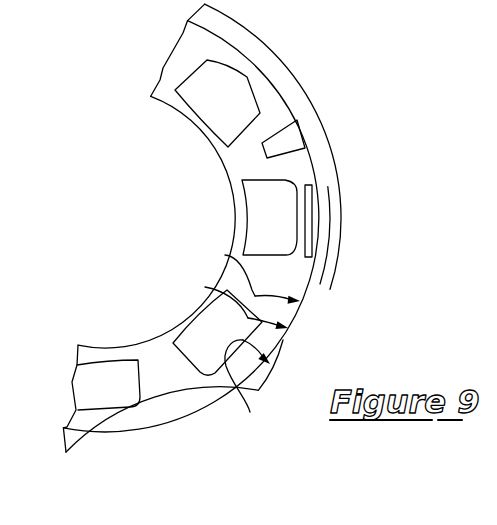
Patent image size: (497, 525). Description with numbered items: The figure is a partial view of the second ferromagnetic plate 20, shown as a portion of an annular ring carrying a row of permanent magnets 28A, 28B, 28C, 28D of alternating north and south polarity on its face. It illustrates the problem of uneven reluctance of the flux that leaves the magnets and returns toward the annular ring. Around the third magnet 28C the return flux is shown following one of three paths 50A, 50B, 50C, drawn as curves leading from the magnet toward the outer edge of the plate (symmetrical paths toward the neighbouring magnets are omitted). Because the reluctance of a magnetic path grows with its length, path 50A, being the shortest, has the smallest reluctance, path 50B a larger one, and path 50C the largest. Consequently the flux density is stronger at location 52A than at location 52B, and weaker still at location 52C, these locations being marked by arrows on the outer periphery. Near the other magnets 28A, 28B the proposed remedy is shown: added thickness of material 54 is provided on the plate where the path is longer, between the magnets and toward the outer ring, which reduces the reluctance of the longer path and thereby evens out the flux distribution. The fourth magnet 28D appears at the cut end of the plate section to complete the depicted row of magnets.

The rotor 20 is at (101, 466).
The added thickness of material 54 is at (314, 130).
The first magnet 28A is at (160, 77).
The second magnet 28B is at (258, 178).
The third magnet 28C is at (190, 333).
The fourth permanent magnet (S) 28D is at (98, 363).
The first flux path 50A is at (250, 412).
The second flux path 50B is at (205, 287).
The third flux path 50C is at (225, 255).
The first location 52A is at (299, 355).
The second location 52B is at (319, 316).
The third location 52C is at (301, 310).